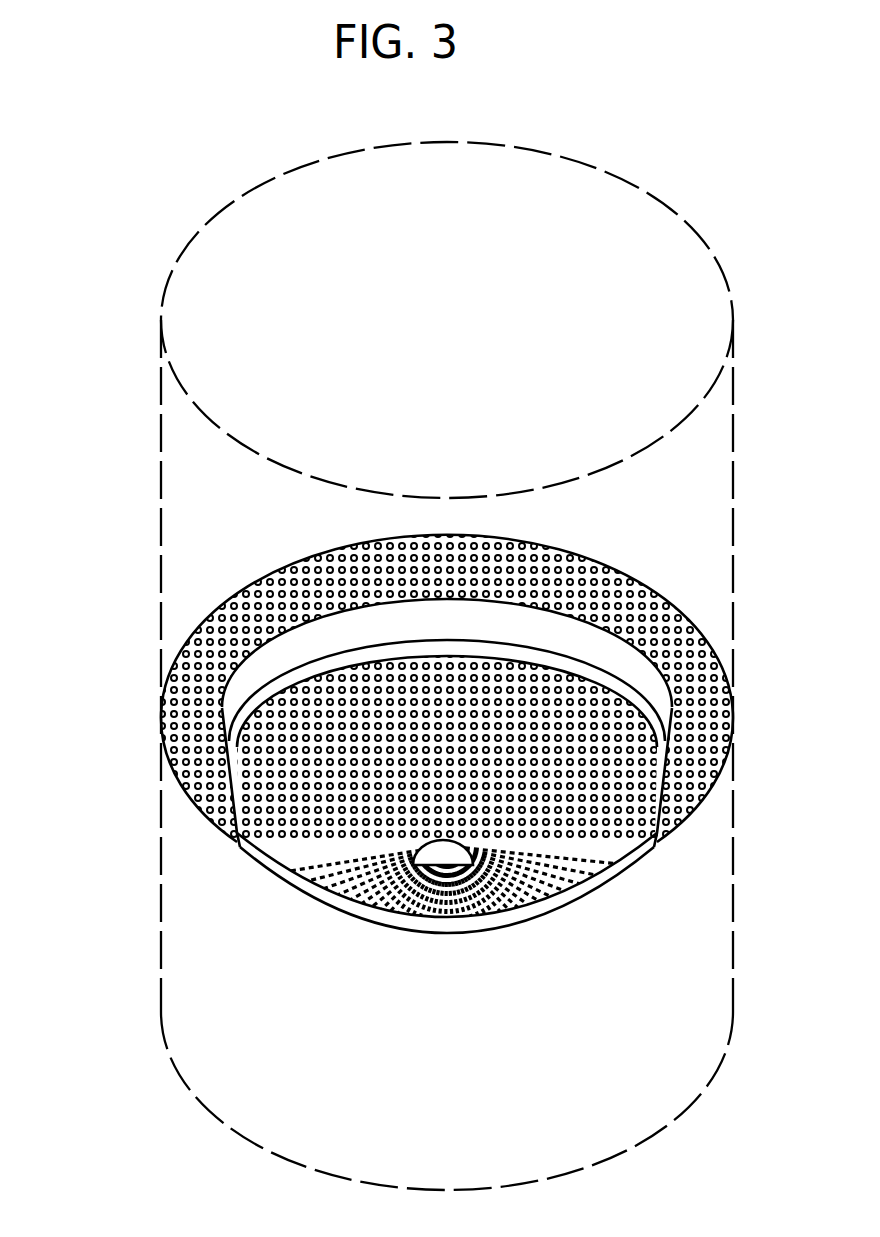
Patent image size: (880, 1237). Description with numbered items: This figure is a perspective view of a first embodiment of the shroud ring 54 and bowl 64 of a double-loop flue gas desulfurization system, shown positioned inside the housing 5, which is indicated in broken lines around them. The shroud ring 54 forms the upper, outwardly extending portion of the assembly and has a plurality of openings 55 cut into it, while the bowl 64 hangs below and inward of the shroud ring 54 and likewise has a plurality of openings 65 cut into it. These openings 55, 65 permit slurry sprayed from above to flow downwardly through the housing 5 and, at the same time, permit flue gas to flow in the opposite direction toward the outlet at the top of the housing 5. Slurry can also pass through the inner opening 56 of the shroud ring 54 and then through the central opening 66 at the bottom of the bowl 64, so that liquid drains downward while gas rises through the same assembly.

The housing 5 is at (124, 427).
The shroud ring 54 is at (173, 665).
The openings 55 is at (434, 866).
The inner opening 56 is at (517, 628).
The bowl 64 is at (235, 840).
The openings 65 is at (655, 850).
The central opening 66 is at (441, 853).